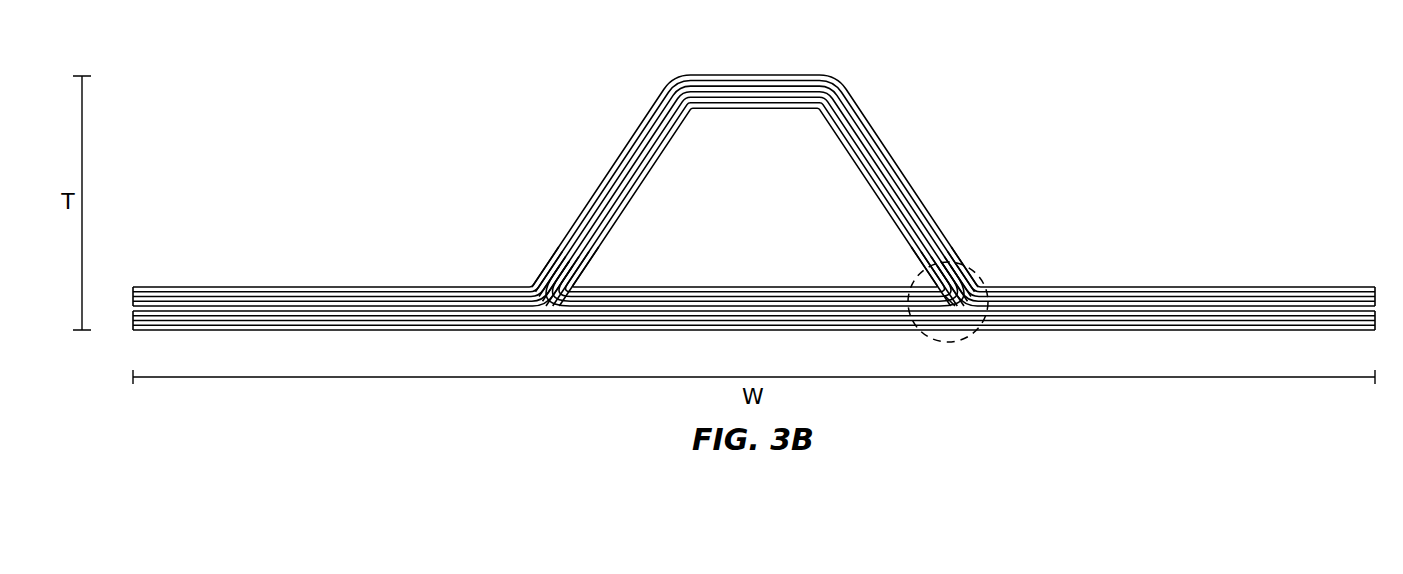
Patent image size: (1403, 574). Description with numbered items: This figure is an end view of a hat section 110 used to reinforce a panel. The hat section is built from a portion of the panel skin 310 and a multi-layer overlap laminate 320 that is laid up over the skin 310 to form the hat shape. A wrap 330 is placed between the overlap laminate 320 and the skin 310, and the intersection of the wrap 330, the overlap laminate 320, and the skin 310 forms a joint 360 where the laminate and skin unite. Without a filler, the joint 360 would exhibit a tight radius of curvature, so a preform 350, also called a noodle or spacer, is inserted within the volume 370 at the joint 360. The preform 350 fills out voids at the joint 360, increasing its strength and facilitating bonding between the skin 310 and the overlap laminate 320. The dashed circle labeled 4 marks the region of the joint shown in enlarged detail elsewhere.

The hat section 110 is at (396, 172).
The skin 310 is at (1250, 331).
The overlap laminate 320 is at (1268, 286).
The wrap 330 is at (836, 141).
The preform 350 is at (950, 300).
The joint 360 is at (547, 285).
The volume 370 is at (937, 341).
The detail view reference (FIG. 4) 4 is at (917, 282).